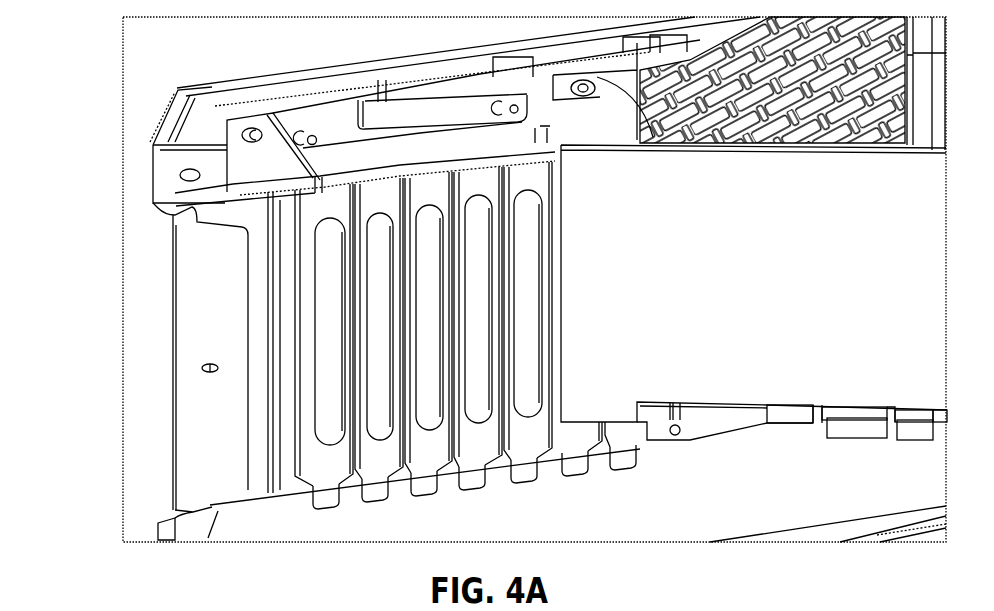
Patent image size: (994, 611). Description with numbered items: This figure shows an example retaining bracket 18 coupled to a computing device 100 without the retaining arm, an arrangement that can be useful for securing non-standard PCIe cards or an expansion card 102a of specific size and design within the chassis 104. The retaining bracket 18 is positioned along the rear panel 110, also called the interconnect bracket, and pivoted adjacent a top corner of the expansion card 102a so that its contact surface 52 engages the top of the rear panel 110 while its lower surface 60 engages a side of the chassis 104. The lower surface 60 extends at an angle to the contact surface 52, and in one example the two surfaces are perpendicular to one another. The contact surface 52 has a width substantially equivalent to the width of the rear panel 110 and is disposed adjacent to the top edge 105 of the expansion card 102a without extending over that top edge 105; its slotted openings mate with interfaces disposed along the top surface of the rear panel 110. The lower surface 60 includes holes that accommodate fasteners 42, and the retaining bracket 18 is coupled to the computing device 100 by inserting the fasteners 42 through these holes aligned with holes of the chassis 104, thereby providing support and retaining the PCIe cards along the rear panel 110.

The computing device 100 is at (105, 60).
The retaining bracket 18 is at (231, 95).
The contact surface 52 is at (352, 160).
The fasteners 42 is at (306, 130).
The lower surface 60 is at (350, 122).
The chassis 104 is at (155, 160).
The top edge 105 is at (760, 145).
The rear panel 110 is at (418, 359).
The expansion card 102a is at (733, 316).